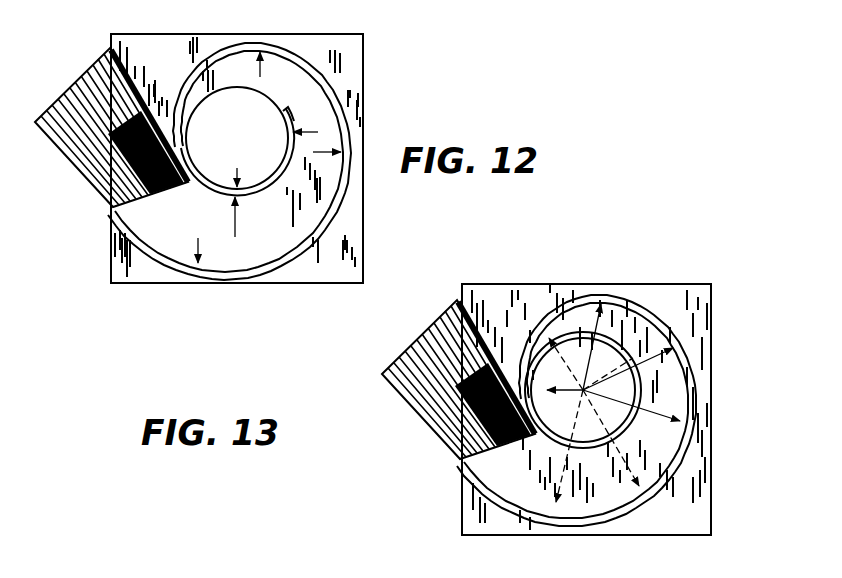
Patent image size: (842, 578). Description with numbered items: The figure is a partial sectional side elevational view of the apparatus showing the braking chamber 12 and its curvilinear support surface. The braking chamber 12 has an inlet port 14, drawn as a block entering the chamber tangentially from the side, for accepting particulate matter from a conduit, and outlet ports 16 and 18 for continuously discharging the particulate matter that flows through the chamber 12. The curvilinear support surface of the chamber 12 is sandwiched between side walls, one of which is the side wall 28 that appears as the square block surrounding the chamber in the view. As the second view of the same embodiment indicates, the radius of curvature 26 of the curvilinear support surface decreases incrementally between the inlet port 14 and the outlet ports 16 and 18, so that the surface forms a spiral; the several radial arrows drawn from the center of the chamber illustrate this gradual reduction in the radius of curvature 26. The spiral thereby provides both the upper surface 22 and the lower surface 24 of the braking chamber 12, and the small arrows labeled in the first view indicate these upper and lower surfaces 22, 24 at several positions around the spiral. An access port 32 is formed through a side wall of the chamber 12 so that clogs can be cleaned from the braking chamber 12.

In FIG. 12, the braking chamber 12 is at (258, 216).
In FIG. 13, the braking chamber 12 is at (576, 410).
In FIG. 12, the inlet port 14 is at (104, 127).
In FIG. 13, the inlet port 14 is at (445, 379).
In FIG. 12, the outlet port 16 is at (292, 121).
In FIG. 13, the outlet port 16 is at (583, 390).
In FIG. 12, the outlet port 18 is at (270, 108).
In FIG. 12, the upper surface 22 is at (282, 155).
In FIG. 12, the lower surface 24 is at (262, 191).
In FIG. 13, the radius of curvature 26 is at (645, 292).
In FIG. 12, the side wall 28 is at (364, 72).
In FIG. 13, the side wall 28 is at (533, 284).
In FIG. 12, the access port 32 is at (112, 154).
In FIG. 13, the access port 32 is at (452, 410).